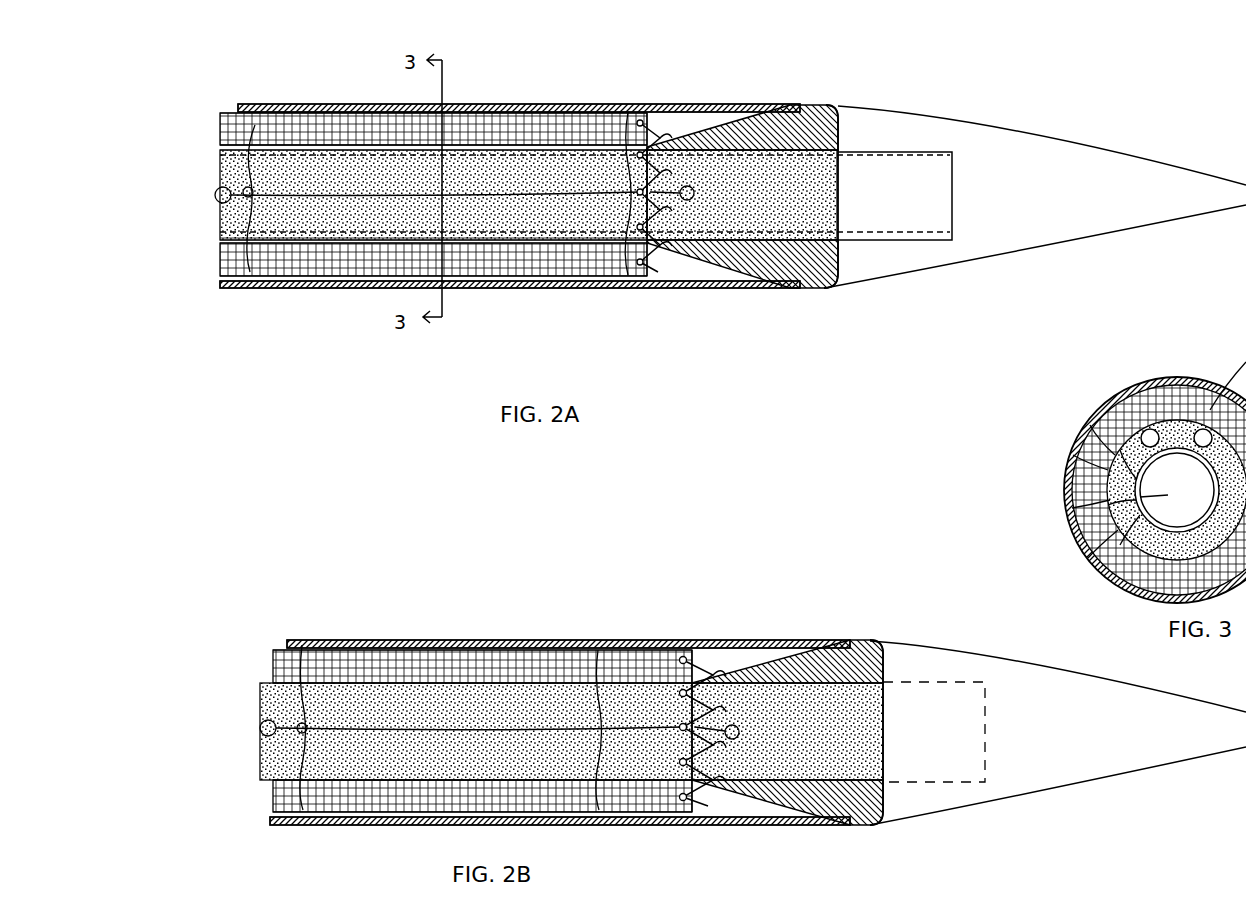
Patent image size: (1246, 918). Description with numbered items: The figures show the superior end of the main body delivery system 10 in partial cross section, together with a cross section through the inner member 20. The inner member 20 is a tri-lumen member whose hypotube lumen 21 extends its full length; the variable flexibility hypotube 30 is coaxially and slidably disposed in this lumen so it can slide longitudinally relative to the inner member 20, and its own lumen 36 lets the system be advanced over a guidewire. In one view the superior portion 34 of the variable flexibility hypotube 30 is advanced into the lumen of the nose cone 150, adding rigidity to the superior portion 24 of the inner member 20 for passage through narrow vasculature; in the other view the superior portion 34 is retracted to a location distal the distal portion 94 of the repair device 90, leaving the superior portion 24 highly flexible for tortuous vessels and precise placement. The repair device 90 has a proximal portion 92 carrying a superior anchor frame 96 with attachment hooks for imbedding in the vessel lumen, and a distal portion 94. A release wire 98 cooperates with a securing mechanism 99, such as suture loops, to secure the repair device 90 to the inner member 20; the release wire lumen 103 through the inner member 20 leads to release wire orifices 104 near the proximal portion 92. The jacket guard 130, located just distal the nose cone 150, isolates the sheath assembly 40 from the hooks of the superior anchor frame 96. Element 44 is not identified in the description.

In FIG. 2A, the main body delivery system 10 is at (570, 326).
In FIG. 2B, the main body delivery system 10 is at (430, 603).
In FIG. 2A, the inner member 20 is at (505, 220).
In FIG. 2B, the inner member 20 is at (645, 770).
In FIG. 3, the inner member 20 is at (1200, 430).
In FIG. 3, the hypotube lumen 21 is at (1140, 497).
In FIG. 2A, the superior portion 24 is at (825, 216).
In FIG. 2B, the superior portion 24 is at (858, 800).
In FIG. 2A, the variable flexibility hypotube 30 is at (857, 222).
In FIG. 2B, the variable flexibility hypotube 30 is at (787, 731).
In FIG. 3, the variable flexibility hypotube 30 is at (1097, 405).
In FIG. 2A, the superior portion 34 is at (937, 240).
In FIG. 2A, the lumen 36 is at (867, 235).
In FIG. 3, the lumen 36 is at (1085, 440).
In FIG. 2A, the sheath assembly 40 is at (686, 104).
In FIG. 2B, the sheath assembly 40 is at (762, 640).
In FIG. 3, the sheath assembly 40 is at (1068, 465).
In FIG. 2A, the tapered distal end 44 is at (797, 104).
In FIG. 2B, the tapered distal end 44 is at (840, 640).
In FIG. 2A, the repair device 90 is at (305, 118).
In FIG. 2B, the repair device 90 is at (360, 660).
In FIG. 3, the repair device 90 is at (1075, 540).
In FIG. 2A, the proximal portion 92 is at (628, 115).
In FIG. 2B, the proximal portion 92 is at (652, 657).
In FIG. 2A, the distal portion 94 is at (223, 85).
In FIG. 2B, the distal portion 94 is at (259, 631).
In FIG. 2A, the superior anchor frame 96 is at (652, 125).
In FIG. 2B, the superior anchor frame 96 is at (697, 670).
In FIG. 2A, the release wire 98 is at (542, 193).
In FIG. 2B, the release wire 98 is at (535, 729).
In FIG. 2A, the securing mechanism 99 is at (255, 125).
In FIG. 2B, the securing mechanism 99 is at (308, 648).
In FIG. 3, the release wire lumen 103 is at (1148, 430).
In FIG. 2A, the release wire orifices 104 is at (220, 205).
In FIG. 2B, the release wire orifices 104 is at (262, 735).
In FIG. 2A, the jacket guard 130 is at (828, 110).
In FIG. 2B, the jacket guard 130 is at (872, 640).
In FIG. 2A, the nose cone 150 is at (905, 115).
In FIG. 2B, the nose cone 150 is at (962, 660).